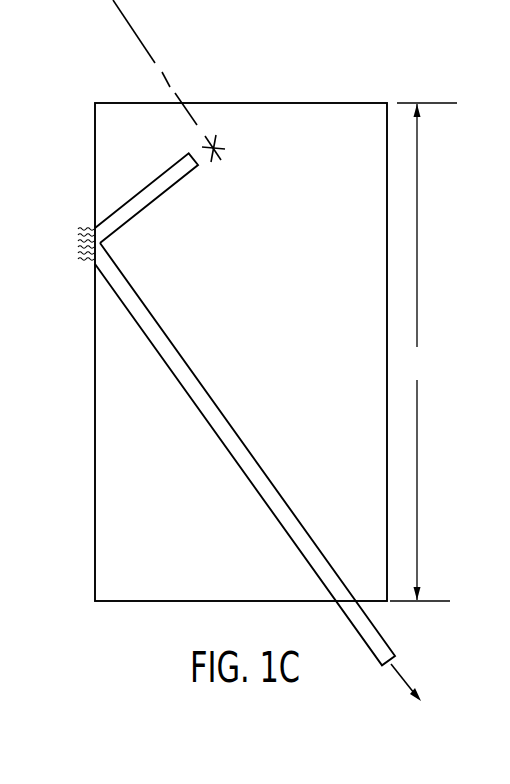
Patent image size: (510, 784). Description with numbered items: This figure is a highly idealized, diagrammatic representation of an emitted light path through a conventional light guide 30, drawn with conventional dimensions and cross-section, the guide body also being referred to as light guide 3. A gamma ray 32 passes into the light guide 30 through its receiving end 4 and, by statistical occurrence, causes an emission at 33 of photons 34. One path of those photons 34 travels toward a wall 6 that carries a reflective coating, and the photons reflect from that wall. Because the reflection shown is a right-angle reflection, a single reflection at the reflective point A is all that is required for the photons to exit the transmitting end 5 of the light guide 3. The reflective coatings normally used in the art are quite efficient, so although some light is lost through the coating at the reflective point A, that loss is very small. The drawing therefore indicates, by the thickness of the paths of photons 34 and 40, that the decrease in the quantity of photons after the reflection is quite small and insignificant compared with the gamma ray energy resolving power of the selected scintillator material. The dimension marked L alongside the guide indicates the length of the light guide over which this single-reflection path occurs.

The light guide 3 is at (308, 388).
The conventional light guide 30 is at (328, 122).
The receiving end 4 is at (252, 101).
The transmitting end 5 is at (160, 603).
The wall 6 is at (93, 338).
The gamma ray 32 is at (160, 48).
The emission point 33 is at (224, 152).
The photons 34 is at (137, 193).
The path of photons 40 is at (88, 227).
The reflective point A is at (63, 246).
The length L is at (423, 352).